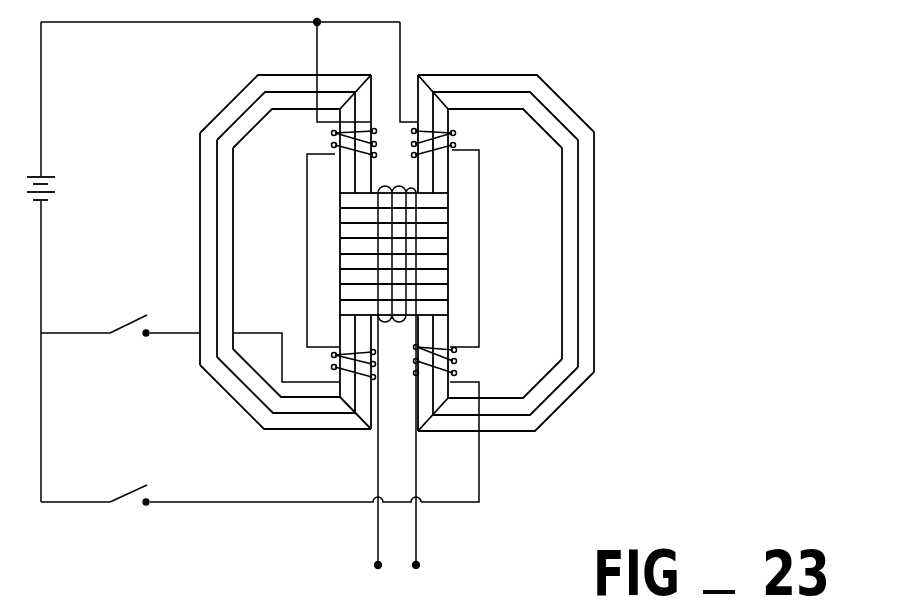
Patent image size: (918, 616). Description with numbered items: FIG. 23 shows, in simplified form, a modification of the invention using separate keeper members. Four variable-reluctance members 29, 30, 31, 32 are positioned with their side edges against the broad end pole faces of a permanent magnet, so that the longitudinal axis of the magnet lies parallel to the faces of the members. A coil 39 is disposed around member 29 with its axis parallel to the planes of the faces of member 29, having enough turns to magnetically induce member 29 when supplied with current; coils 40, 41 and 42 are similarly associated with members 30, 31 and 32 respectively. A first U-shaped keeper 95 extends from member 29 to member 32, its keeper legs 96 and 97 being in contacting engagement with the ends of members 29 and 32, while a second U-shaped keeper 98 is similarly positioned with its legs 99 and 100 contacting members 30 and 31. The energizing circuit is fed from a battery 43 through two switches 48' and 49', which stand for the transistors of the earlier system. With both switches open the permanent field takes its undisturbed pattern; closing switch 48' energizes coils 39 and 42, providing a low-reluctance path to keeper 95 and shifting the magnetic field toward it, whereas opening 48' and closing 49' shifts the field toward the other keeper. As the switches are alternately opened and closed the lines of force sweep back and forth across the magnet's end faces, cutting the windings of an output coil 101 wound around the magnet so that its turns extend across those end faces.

The variable-reluctance member 29 is at (365, 402).
The variable-reluctance member 30 is at (427, 407).
The variable-reluctance member 31 is at (443, 116).
The variable-reluctance member 32 is at (372, 100).
The coil 39 is at (333, 367).
The coil 40 is at (456, 363).
The coil 41 is at (414, 144).
The coil 42 is at (333, 134).
The battery 43 is at (55, 192).
The switch 48' is at (108, 307).
The switch 49' is at (119, 468).
The first U-shaped keeper 95 is at (258, 259).
The keeper leg 96 is at (277, 432).
The keeper leg 97 is at (297, 74).
The second U-shaped keeper 98 is at (535, 258).
The keeper leg 99 is at (510, 427).
The keeper leg 100 is at (503, 78).
The output coil 101 is at (403, 247).